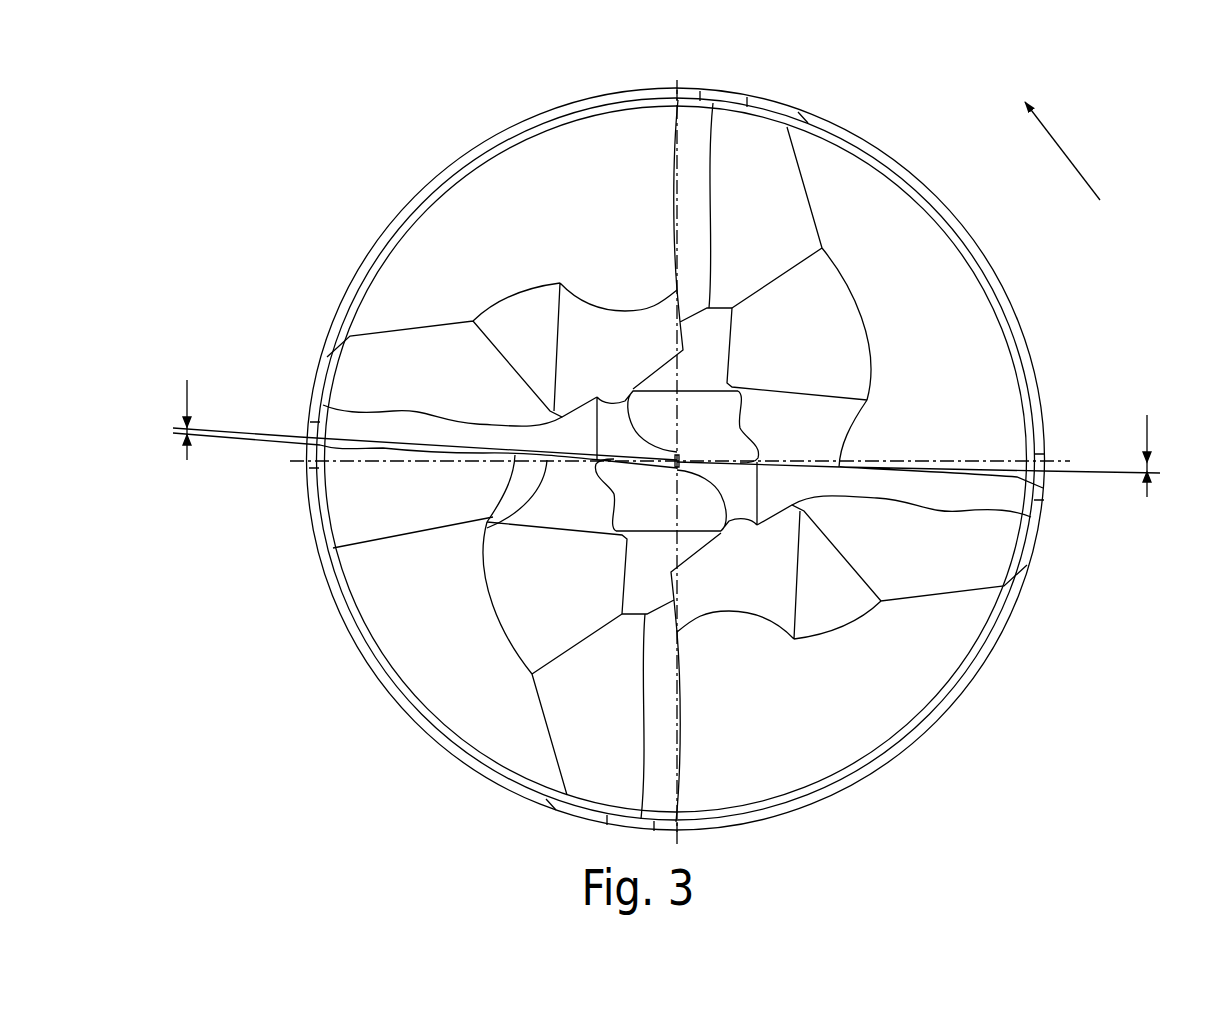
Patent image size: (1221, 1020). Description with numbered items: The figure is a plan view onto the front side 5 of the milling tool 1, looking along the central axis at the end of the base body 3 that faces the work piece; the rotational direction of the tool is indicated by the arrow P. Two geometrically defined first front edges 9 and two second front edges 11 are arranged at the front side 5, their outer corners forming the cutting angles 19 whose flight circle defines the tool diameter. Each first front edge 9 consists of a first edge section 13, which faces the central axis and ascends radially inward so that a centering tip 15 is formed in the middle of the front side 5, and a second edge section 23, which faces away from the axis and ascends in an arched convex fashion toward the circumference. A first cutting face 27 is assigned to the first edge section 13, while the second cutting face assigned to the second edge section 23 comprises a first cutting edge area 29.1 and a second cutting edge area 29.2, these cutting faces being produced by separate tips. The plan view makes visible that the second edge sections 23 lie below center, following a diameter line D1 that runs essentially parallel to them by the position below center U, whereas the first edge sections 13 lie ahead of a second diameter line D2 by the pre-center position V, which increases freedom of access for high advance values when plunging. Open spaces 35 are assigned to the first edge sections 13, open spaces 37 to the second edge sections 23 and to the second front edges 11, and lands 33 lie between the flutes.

The milling tool 1 is at (975, 78).
The base body 3 is at (398, 212).
The front side 5 is at (787, 354).
The first front edge 9 is at (930, 437).
The second front edge 11 is at (585, 182).
The first edge section 13 is at (700, 443).
The centering tip 15 is at (667, 443).
The cutting angle 19 is at (688, 95).
The second edge section 23 is at (677, 237).
The first cutting face 27 is at (689, 426).
The first cutting edge area 29.1 is at (780, 444).
The second cutting edge area 29.2 is at (959, 447).
The land 33 is at (466, 249).
The open space 35 is at (600, 450).
The open space 37 is at (680, 183).
The diameter line D1 is at (1087, 466).
The second diameter line D2 is at (247, 427).
The position below center U is at (1156, 456).
The pre-center position V is at (179, 415).
The rotational direction P is at (1073, 155).